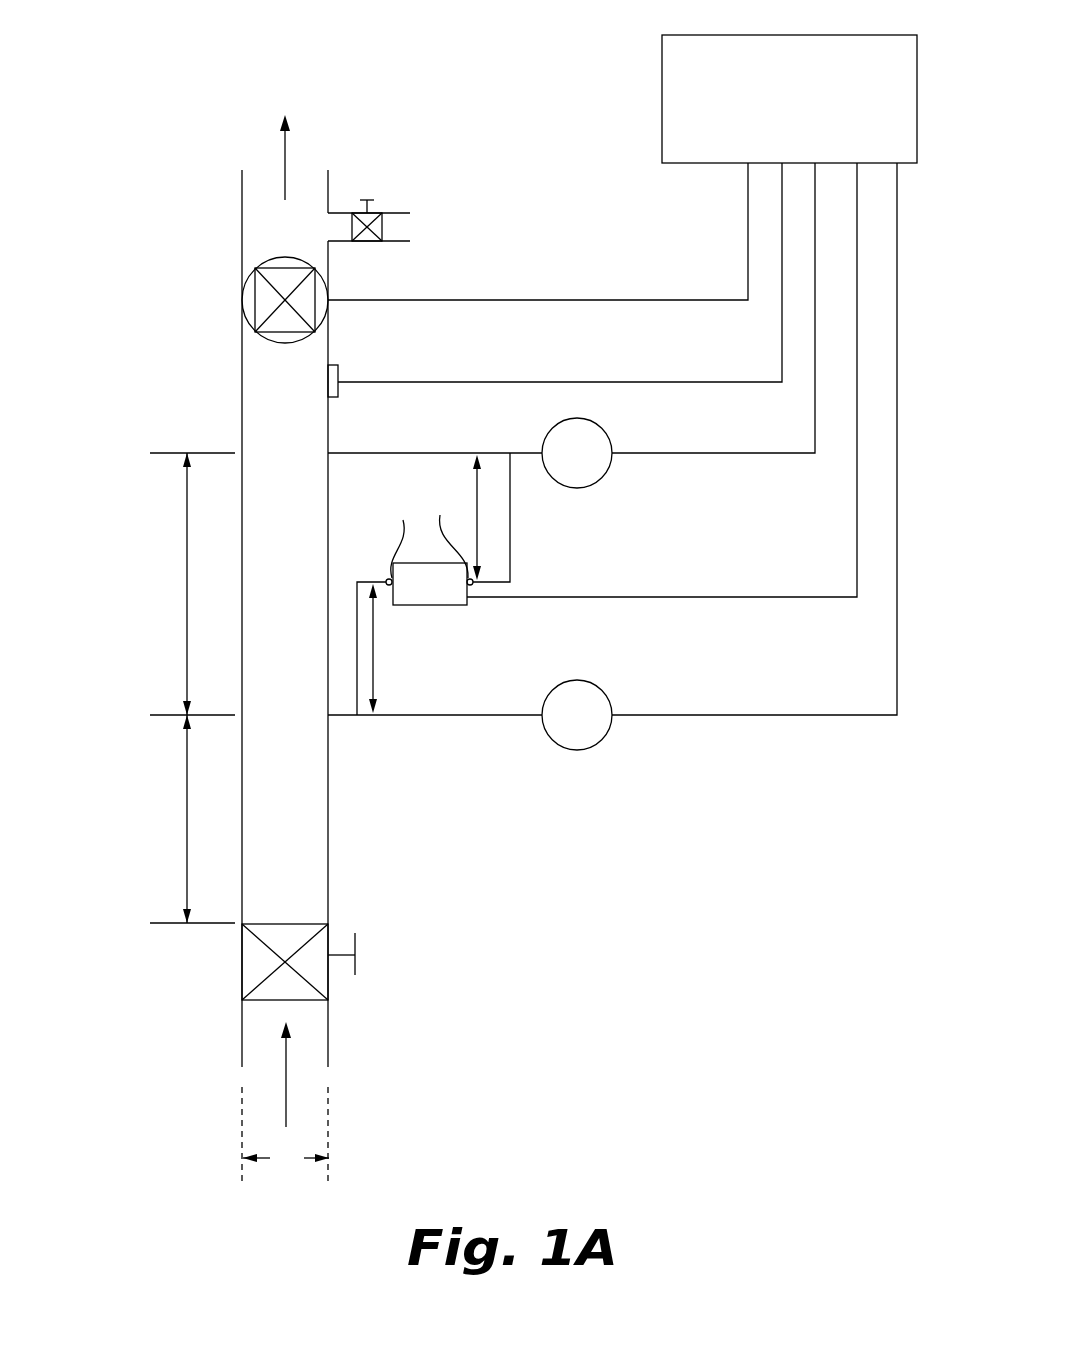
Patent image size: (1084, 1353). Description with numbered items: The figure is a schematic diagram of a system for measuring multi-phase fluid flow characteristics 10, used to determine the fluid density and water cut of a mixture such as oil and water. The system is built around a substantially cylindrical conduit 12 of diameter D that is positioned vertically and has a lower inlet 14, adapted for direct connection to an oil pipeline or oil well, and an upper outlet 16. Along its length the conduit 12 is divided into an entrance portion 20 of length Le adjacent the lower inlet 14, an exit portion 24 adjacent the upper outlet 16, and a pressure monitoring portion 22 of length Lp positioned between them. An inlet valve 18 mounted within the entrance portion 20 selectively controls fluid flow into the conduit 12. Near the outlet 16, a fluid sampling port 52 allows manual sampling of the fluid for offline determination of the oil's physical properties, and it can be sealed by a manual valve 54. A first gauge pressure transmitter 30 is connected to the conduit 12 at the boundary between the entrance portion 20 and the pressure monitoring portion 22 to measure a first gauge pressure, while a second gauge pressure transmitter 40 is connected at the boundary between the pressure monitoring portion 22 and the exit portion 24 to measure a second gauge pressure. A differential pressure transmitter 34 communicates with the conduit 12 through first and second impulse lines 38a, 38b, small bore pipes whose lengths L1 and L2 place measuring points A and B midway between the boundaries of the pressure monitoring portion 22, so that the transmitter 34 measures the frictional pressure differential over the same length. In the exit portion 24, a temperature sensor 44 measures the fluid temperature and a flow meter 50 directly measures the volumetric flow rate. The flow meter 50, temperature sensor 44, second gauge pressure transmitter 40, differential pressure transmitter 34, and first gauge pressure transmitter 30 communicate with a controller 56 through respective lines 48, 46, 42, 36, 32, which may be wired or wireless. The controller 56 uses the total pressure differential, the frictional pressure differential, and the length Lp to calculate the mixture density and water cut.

The system for measuring multi-phase fluid flow characteristics 10 is at (162, 89).
The substantially cylindrical conduit 12 is at (271, 676).
The lower inlet 14 is at (314, 1077).
The upper outlet 16 is at (250, 171).
The inlet valve 18 is at (360, 926).
The entrance portion 20 is at (329, 850).
The pressure monitoring portion 22 is at (242, 535).
The exit portion 24 is at (242, 212).
The first gauge pressure transmitter 30 is at (592, 750).
The line 32 is at (855, 717).
The differential pressure transmitter 34 is at (468, 603).
The line 36 is at (750, 598).
The first impulse line 38a is at (357, 630).
The second impulse line 38b is at (510, 540).
The second gauge pressure transmitter 40 is at (607, 475).
The line 42 is at (730, 455).
The temperature sensor 44 is at (338, 380).
The line 46 is at (782, 348).
The line 48 is at (533, 300).
The flow meter 50 is at (222, 282).
The fluid sampling port 52 is at (393, 242).
The manual valve 54 is at (430, 198).
The controller 56 is at (662, 128).